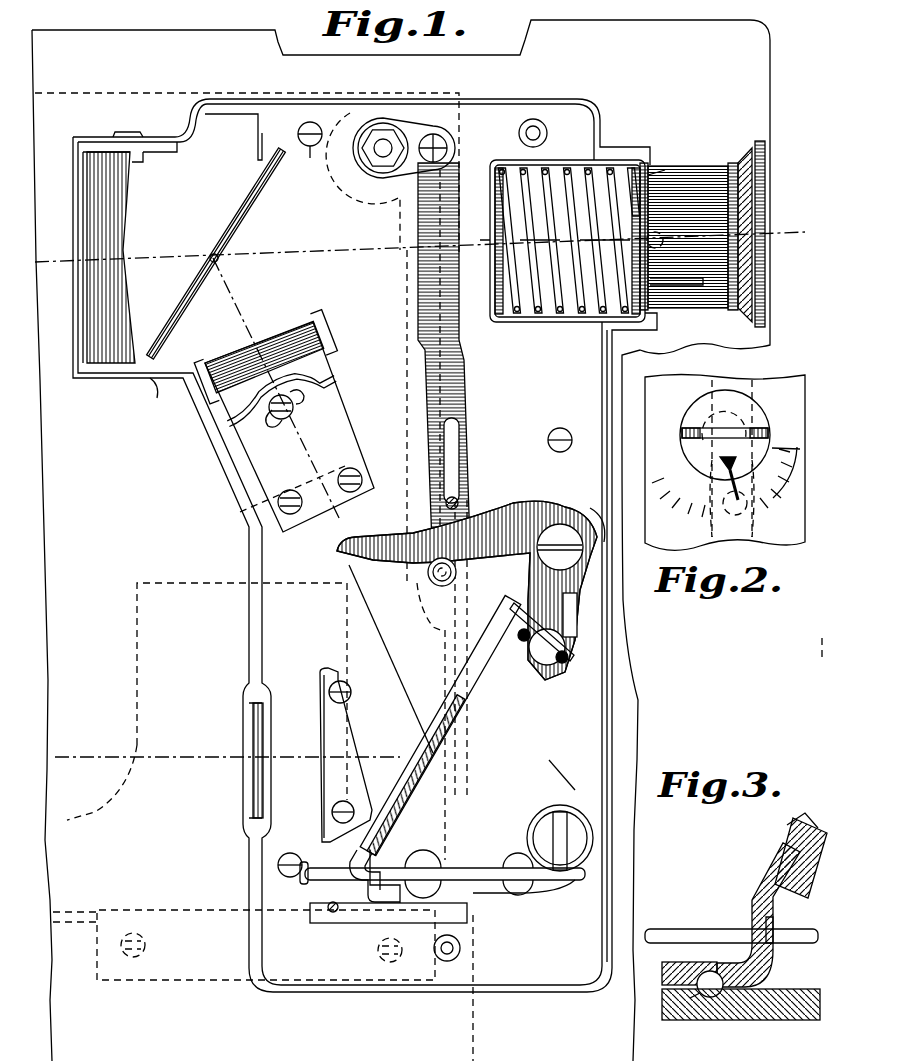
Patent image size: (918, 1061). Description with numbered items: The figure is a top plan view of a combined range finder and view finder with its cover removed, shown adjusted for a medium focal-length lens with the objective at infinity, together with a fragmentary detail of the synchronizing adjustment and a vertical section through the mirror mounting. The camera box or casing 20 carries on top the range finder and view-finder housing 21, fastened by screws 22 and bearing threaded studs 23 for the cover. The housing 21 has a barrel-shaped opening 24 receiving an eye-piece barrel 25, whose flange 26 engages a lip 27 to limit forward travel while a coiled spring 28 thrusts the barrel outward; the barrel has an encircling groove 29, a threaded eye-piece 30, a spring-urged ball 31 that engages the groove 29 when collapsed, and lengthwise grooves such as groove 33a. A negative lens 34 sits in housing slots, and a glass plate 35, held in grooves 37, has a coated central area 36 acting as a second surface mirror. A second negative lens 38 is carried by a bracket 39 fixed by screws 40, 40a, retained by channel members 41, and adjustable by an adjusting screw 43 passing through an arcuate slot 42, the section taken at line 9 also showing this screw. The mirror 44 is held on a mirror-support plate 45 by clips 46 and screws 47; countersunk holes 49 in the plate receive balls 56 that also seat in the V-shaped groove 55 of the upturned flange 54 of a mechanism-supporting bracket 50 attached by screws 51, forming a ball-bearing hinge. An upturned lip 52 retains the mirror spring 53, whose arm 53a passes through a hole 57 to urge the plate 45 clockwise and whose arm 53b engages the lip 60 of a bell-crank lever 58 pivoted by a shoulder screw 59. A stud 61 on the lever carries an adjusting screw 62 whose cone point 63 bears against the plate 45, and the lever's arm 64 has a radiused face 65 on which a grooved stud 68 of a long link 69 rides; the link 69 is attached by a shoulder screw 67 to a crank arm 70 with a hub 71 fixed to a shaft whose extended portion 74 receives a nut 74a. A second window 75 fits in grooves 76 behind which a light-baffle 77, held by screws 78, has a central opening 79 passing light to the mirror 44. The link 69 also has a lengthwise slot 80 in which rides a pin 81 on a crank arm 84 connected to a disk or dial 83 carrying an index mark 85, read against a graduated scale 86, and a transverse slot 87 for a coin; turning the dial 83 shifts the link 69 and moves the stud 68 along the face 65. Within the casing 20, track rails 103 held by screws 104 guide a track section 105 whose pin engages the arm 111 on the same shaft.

In FIG. 1, the section line 9 is at (200, 212).
In FIG. 1, the camera box or casing 20 is at (750, 90).
In FIG. 1, the range finder and view-finder housing 21 is at (262, 614).
In FIG. 1, the screws 22 is at (290, 853).
In FIG. 1, the threaded studs 23 is at (548, 134).
In FIG. 1, the barrel-shaped opening 24 is at (548, 325).
In FIG. 1, the eye-piece barrel 25 is at (683, 178).
In FIG. 1, the flange 26 is at (652, 175).
In FIG. 1, the lip 27 is at (645, 165).
In FIG. 1, the coiled spring 28 is at (604, 163).
In FIG. 1, the encircling groove 29 is at (728, 165).
In FIG. 1, the threaded eye-piece 30 is at (753, 160).
In FIG. 1, the ball 31 is at (666, 240).
In FIG. 1, the lengthwise extending groove 33a is at (700, 305).
In FIG. 1, the negative lens 34 is at (130, 200).
In FIG. 1, the glass plate 35 is at (235, 243).
In FIG. 1, the central solid portion or area 36 is at (205, 255).
In FIG. 1, the grooves 37 is at (262, 136).
In FIG. 1, the second negative lens 38 is at (278, 345).
In FIG. 1, the bracket 39 is at (245, 437).
In FIG. 1, the screw 40 is at (349, 466).
In FIG. 1, the screw 40a is at (290, 490).
In FIG. 1, the channel members 41 is at (324, 337).
In FIG. 1, the arcuate slot 42 is at (280, 422).
In FIG. 1, the adjusting screw 43 is at (298, 416).
In FIG. 3, the mirror 44 is at (790, 845).
In FIG. 1, the mirror-support plate 45 is at (358, 850).
In FIG. 3, the mirror-support plate 45 is at (770, 868).
In FIG. 1, the clips 46 is at (490, 718).
In FIG. 3, the clips 46 is at (808, 897).
In FIG. 1, the screws 47 is at (500, 690).
In FIG. 3, the countersunk holes 49 is at (710, 965).
In FIG. 1, the mechanism-supporting bracket 50 is at (575, 790).
In FIG. 1, the screws 51 is at (520, 860).
In FIG. 1, the upturned lip 52 is at (596, 840).
In FIG. 1, the mirror spring 53 is at (572, 876).
In FIG. 1, the spring arm 53a is at (307, 875).
In FIG. 3, the spring arm 53a is at (668, 930).
In FIG. 1, the spring arm 53b is at (602, 690).
In FIG. 1, the upturned end or flange 54 is at (420, 925).
In FIG. 3, the upturned end or flange 54 is at (795, 1012).
In FIG. 1, the V-shaped groove 55 is at (340, 912).
In FIG. 3, the V-shaped groove 55 is at (712, 997).
In FIG. 1, the ball 56 is at (332, 912).
In FIG. 3, the ball 56 is at (705, 996).
In FIG. 1, the hole 57 is at (355, 870).
In FIG. 3, the hole 57 is at (752, 918).
In FIG. 1, the bell-crank lever 58 is at (592, 515).
In FIG. 1, the shoulder screw 59 is at (560, 524).
In FIG. 1, the upturned lip 60 is at (578, 610).
In FIG. 1, the stud or screw 61 is at (565, 650).
In FIG. 1, the adjusting screw 62 is at (572, 665).
In FIG. 1, the rounded cone point 63 is at (515, 624).
In FIG. 1, the arm 64 is at (515, 520).
In FIG. 1, the face or edge 65 is at (498, 560).
In FIG. 1, the shoulder screw 67 is at (448, 150).
In FIG. 1, the stud 68 is at (430, 578).
In FIG. 1, the long link or member 69 is at (420, 292).
In FIG. 1, the crank arm 70 is at (415, 125).
In FIG. 1, the hub 71 is at (365, 165).
In FIG. 1, the extended portion 74 is at (379, 165).
In FIG. 1, the nut 74a is at (378, 128).
In FIG. 1, the second window 75 is at (253, 785).
In FIG. 1, the grooves 76 is at (248, 692).
In FIG. 1, the light-baffle 77 is at (345, 724).
In FIG. 1, the screws 78 is at (340, 682).
In FIG. 1, the central opening 79 is at (320, 735).
In FIG. 1, the lengthwise extending slot 80 is at (455, 447).
In FIG. 1, the pin 81 is at (460, 505).
In FIG. 2, the pin 81 is at (712, 525).
In FIG. 2, the disk or dial 83 is at (693, 412).
In FIG. 2, the crank arm 84 is at (690, 452).
In FIG. 2, the index mark 85 is at (755, 458).
In FIG. 2, the graduated scale 86 is at (770, 490).
In FIG. 2, the transverse slot 87 is at (753, 427).
In FIG. 1, the track rails 103 is at (208, 985).
In FIG. 1, the screws 104 is at (148, 945).
In FIG. 1, the track section 105 is at (183, 586).
In FIG. 1, the arm 111 is at (405, 378).